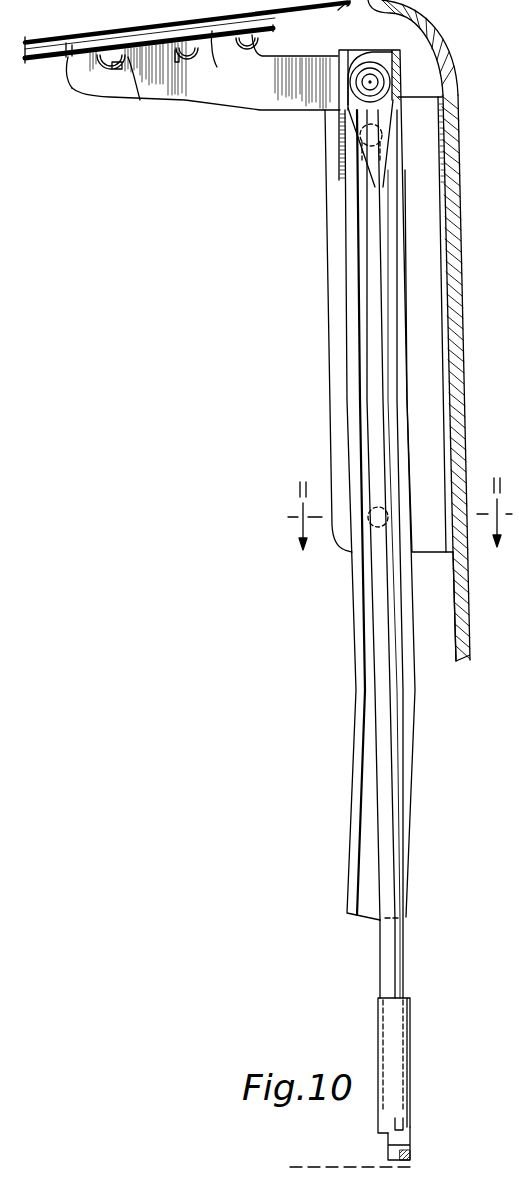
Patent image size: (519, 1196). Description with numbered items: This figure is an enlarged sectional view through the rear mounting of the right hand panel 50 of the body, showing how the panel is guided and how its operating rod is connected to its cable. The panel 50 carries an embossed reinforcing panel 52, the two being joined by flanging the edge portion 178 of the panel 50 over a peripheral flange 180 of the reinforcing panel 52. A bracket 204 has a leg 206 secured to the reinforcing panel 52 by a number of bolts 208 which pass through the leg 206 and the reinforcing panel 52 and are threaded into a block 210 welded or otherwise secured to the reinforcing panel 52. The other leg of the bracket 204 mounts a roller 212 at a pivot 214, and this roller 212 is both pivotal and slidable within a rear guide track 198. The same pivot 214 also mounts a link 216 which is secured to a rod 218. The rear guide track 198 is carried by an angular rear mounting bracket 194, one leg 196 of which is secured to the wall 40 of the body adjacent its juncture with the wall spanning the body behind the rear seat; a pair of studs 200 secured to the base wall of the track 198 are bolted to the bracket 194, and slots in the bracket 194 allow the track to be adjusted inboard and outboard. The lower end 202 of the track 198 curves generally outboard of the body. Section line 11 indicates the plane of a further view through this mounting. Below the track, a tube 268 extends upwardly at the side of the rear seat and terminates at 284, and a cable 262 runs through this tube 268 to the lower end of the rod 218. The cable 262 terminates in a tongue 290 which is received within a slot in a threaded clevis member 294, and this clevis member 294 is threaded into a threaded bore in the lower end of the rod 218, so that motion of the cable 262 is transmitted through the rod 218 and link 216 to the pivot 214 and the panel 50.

The block 210 is at (72, 50).
The embossed reinforcing panel 52 is at (50, 64).
The leg 206 is at (76, 87).
The bolts 208 is at (140, 100).
The right hand panel 50 is at (200, 63).
The bracket 204 is at (252, 97).
The peripheral flange 180 is at (312, 7).
The edge portion 178 is at (338, 10).
The roller 212 is at (378, 52).
The pivot 214 is at (385, 81).
The link 216 is at (350, 111).
The studs 200 is at (358, 130).
The angular rear mounting bracket 194 is at (430, 163).
The leg 196 is at (445, 378).
The wall 40 is at (455, 463).
The rear guide track 198 is at (355, 364).
The lower end 202 is at (353, 897).
The rod 218 is at (388, 760).
The section line 11- 11 is at (389, 524).
The terminating end of tube 284 is at (380, 1000).
The tube 268 is at (392, 1032).
The threaded clevis member 294 is at (392, 1140).
The tongue 290 is at (392, 1147).
The cable 262 is at (414, 1157).